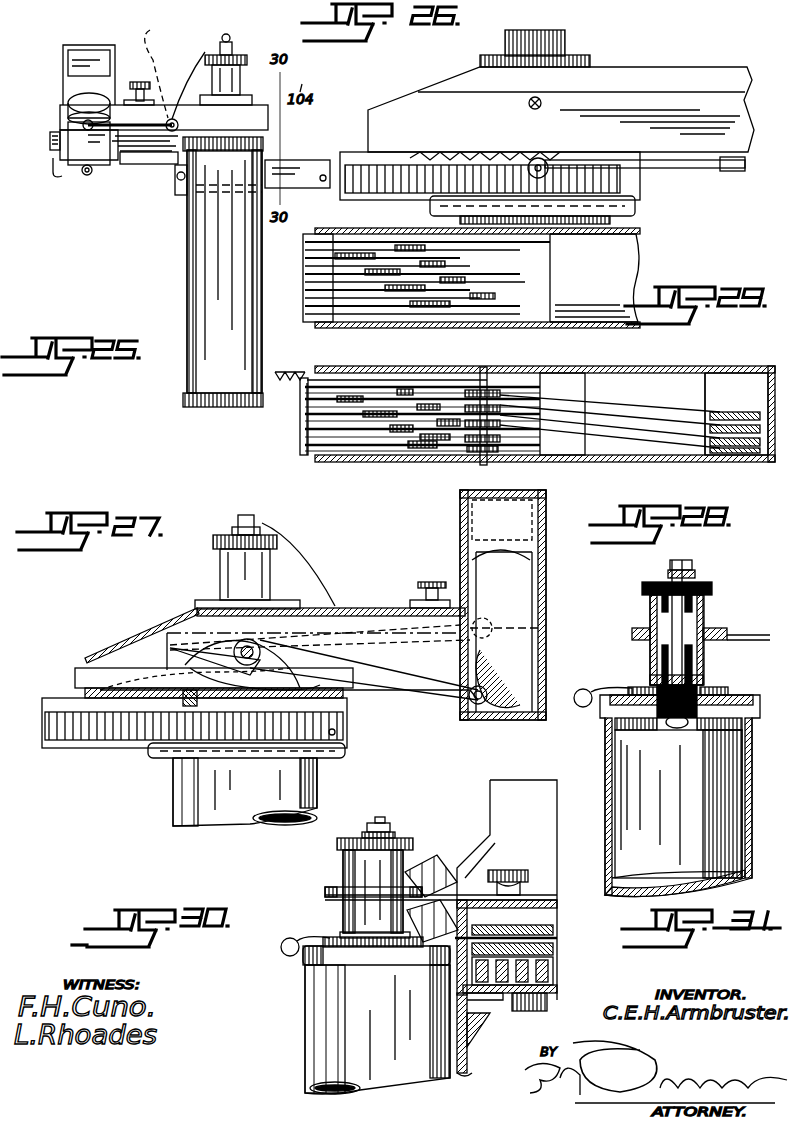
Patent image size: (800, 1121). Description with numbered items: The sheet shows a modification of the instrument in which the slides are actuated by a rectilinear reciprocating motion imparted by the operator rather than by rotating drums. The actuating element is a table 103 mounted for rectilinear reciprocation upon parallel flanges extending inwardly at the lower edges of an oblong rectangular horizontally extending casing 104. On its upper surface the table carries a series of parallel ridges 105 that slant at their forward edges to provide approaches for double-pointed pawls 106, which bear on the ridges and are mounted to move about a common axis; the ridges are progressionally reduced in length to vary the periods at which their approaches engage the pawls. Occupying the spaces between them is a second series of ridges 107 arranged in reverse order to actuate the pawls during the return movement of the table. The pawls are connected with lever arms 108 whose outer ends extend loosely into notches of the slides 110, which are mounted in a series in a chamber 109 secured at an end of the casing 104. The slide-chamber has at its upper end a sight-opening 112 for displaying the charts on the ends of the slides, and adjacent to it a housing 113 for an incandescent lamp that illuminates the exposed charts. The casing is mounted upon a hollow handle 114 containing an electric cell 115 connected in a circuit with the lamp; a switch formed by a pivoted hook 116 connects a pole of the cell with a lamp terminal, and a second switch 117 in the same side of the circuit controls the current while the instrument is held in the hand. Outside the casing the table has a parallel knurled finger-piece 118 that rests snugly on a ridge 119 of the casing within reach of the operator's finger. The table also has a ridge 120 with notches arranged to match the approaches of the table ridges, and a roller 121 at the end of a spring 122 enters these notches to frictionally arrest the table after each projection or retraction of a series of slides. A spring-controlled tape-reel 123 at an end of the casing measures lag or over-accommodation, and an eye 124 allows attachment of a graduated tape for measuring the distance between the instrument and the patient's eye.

In FIG. 29, the table 103 is at (510, 252).
In FIG. 28, the table 103 is at (570, 385).
In FIG. 27, the table 103 is at (78, 674).
In FIG. 26, the casing 104 is at (655, 66).
In FIG. 29, the casing 104 is at (620, 262).
In FIG. 28, the casing 104 is at (675, 372).
In FIG. 27, the casing 104 is at (355, 608).
In FIG. 29, the ridges 105 is at (395, 248).
In FIG. 28, the ridges 105 is at (422, 419).
In FIG. 30, the ridges 105 is at (555, 972).
In FIG. 28, the pawls 106 is at (513, 385).
In FIG. 27, the pawls 106 is at (193, 653).
In FIG. 30, the pawls 106 is at (555, 922).
In FIG. 29, the second series of ridges 107 is at (340, 245).
In FIG. 28, the lever arms 108 is at (645, 405).
In FIG. 27, the lever arms 108 is at (405, 675).
In FIG. 28, the chamber 109 is at (742, 372).
In FIG. 27, the chamber 109 is at (548, 615).
In FIG. 28, the slides 110 is at (718, 452).
In FIG. 27, the slides 110 is at (510, 586).
In FIG. 25, the sight-opening 112 is at (92, 45).
In FIG. 25, the housing 113 is at (68, 106).
In FIG. 25, the hollow handle 114 is at (186, 252).
In FIG. 27, the hollow handle 114 is at (174, 822).
In FIG. 31, the hollow handle 114 is at (604, 756).
In FIG. 30, the hollow handle 114 is at (304, 1006).
In FIG. 31, the electric cell 115 is at (677, 798).
In FIG. 25, the pivoted hook 116 is at (165, 40).
In FIG. 31, the second switch 117 is at (598, 688).
In FIG. 30, the second switch 117 is at (299, 938).
In FIG. 26, the knurled finger-piece 118 is at (640, 200).
In FIG. 28, the knurled finger-piece 118 is at (286, 382).
In FIG. 27, the knurled finger-piece 118 is at (78, 748).
In FIG. 30, the knurled finger-piece 118 is at (486, 1030).
In FIG. 27, the ridge 119 is at (163, 760).
In FIG. 30, the ridge 119 is at (472, 1066).
In FIG. 26, the ridge 120 is at (474, 153).
In FIG. 26, the roller 121 is at (540, 157).
In FIG. 26, the spring 122 is at (670, 170).
In FIG. 25, the tape-reel 123 is at (50, 138).
In FIG. 25, the eye 124 is at (84, 176).